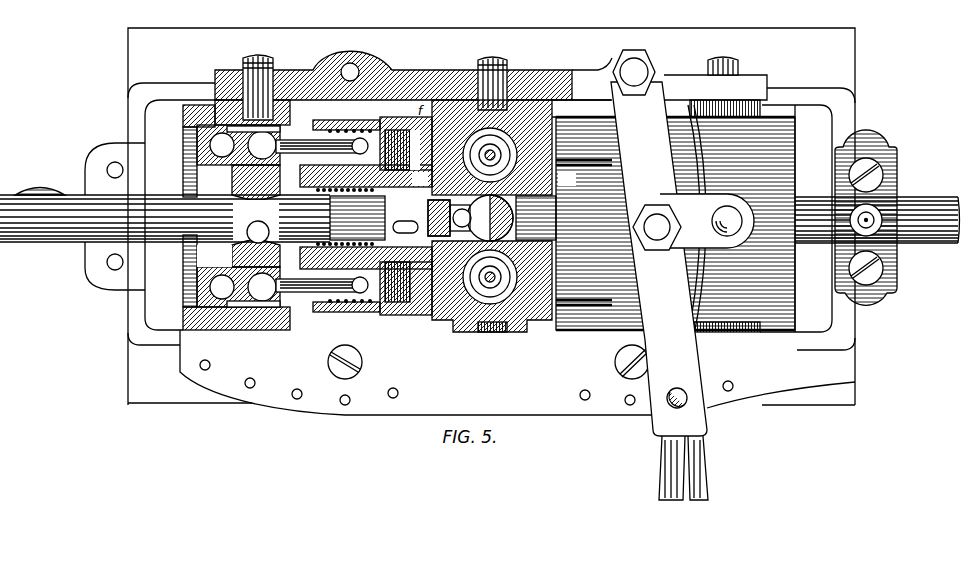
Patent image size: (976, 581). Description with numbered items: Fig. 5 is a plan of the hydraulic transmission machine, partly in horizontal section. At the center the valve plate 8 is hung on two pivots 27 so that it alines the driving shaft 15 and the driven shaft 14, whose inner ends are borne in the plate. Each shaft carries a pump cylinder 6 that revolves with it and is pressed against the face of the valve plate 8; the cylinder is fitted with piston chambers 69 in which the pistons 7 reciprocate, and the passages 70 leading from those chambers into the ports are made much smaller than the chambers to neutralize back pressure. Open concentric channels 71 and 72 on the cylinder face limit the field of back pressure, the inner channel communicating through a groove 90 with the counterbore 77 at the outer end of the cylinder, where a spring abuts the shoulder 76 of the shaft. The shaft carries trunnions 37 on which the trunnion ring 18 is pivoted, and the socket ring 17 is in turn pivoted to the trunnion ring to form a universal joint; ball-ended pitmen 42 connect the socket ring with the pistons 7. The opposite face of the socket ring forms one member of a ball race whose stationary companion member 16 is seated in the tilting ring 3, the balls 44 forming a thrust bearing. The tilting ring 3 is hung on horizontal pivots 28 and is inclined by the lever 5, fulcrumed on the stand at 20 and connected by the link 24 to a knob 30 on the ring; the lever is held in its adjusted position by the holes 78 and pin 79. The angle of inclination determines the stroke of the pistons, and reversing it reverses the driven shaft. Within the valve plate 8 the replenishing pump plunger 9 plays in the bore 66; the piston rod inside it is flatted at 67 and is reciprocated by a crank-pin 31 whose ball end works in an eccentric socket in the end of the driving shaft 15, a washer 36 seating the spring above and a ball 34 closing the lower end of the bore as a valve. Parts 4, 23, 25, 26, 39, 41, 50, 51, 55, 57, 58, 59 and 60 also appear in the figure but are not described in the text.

The tilting ring 3 is at (183, 115).
The base plate 4 is at (517, 372).
The lever 5 is at (659, 291).
The pump cylinder 6 is at (583, 217).
The pistons 7 is at (365, 217).
The valve plate 8 is at (492, 216).
The plunger 9 is at (552, 112).
The driven shaft 14 is at (877, 230).
The driving shaft 15 is at (165, 223).
The ball race member 16 is at (214, 256).
The socket ring 17 is at (253, 215).
The trunnion ring 18 is at (256, 216).
The fulcrum 20 is at (634, 72).
The pivot nut 23 is at (657, 227).
The link 24 is at (707, 221).
The screw 25 is at (488, 362).
The screw 26 is at (866, 218).
The pivots 27 is at (492, 197).
The horizontal pivots 28 is at (490, 79).
The knob 30 is at (733, 212).
The crank-pin 31 is at (481, 218).
The ball 34 is at (490, 277).
The washer 36 is at (490, 155).
The trunnions 37 is at (258, 222).
The pin 39 is at (405, 219).
The wedge 41 is at (439, 218).
The pitmen 42 is at (317, 216).
The balls 44 is at (238, 216).
The ring 50 is at (447, 143).
The ring 51 is at (445, 255).
The ring 55 is at (541, 256).
The ring 57 is at (540, 143).
The ring 58 is at (525, 295).
The ring 59 is at (480, 122).
The ring 60 is at (517, 305).
The bore 66 is at (463, 134).
The flat 67 is at (514, 248).
The piston chambers 69 is at (406, 216).
The passages 70 is at (418, 207).
The outer concentric channel 71 is at (419, 215).
The inner concentric channel 72 is at (553, 180).
The shoulder 76 is at (320, 187).
The counterbore 77 is at (346, 216).
The holes 78 is at (476, 383).
The pin 79 is at (677, 389).
The groove 90 is at (443, 218).